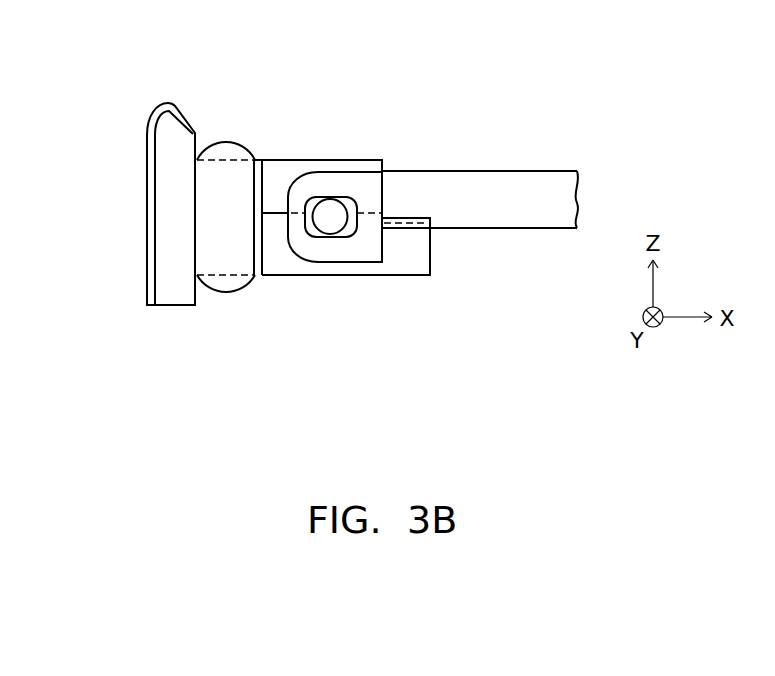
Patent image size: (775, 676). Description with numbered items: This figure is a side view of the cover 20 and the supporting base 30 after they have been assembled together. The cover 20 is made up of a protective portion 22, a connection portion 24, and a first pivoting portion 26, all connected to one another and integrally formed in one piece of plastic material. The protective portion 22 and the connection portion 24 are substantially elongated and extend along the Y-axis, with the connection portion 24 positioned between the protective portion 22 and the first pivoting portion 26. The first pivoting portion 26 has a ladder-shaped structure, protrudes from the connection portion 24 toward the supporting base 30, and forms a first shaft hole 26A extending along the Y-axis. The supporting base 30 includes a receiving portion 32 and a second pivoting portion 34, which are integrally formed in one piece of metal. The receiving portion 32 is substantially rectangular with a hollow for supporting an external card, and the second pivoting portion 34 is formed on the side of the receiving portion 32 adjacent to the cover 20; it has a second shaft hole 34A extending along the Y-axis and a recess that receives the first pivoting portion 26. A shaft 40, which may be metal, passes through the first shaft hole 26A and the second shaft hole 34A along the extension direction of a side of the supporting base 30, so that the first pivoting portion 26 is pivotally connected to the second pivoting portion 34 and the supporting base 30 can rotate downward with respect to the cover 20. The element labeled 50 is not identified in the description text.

The cover 20 is at (120, 86).
The protective portion 22 is at (147, 220).
The connection portion 24 is at (225, 255).
The first pivoting portion 26 is at (280, 178).
The first shaft hole 26A is at (342, 198).
The supporting base 30 is at (578, 156).
The receiving portion 32 is at (473, 178).
The second pivoting portion 34 is at (352, 247).
The second shaft hole 34A is at (315, 233).
The shaft 40 is at (330, 216).
The cylinder 50 is at (223, 152).